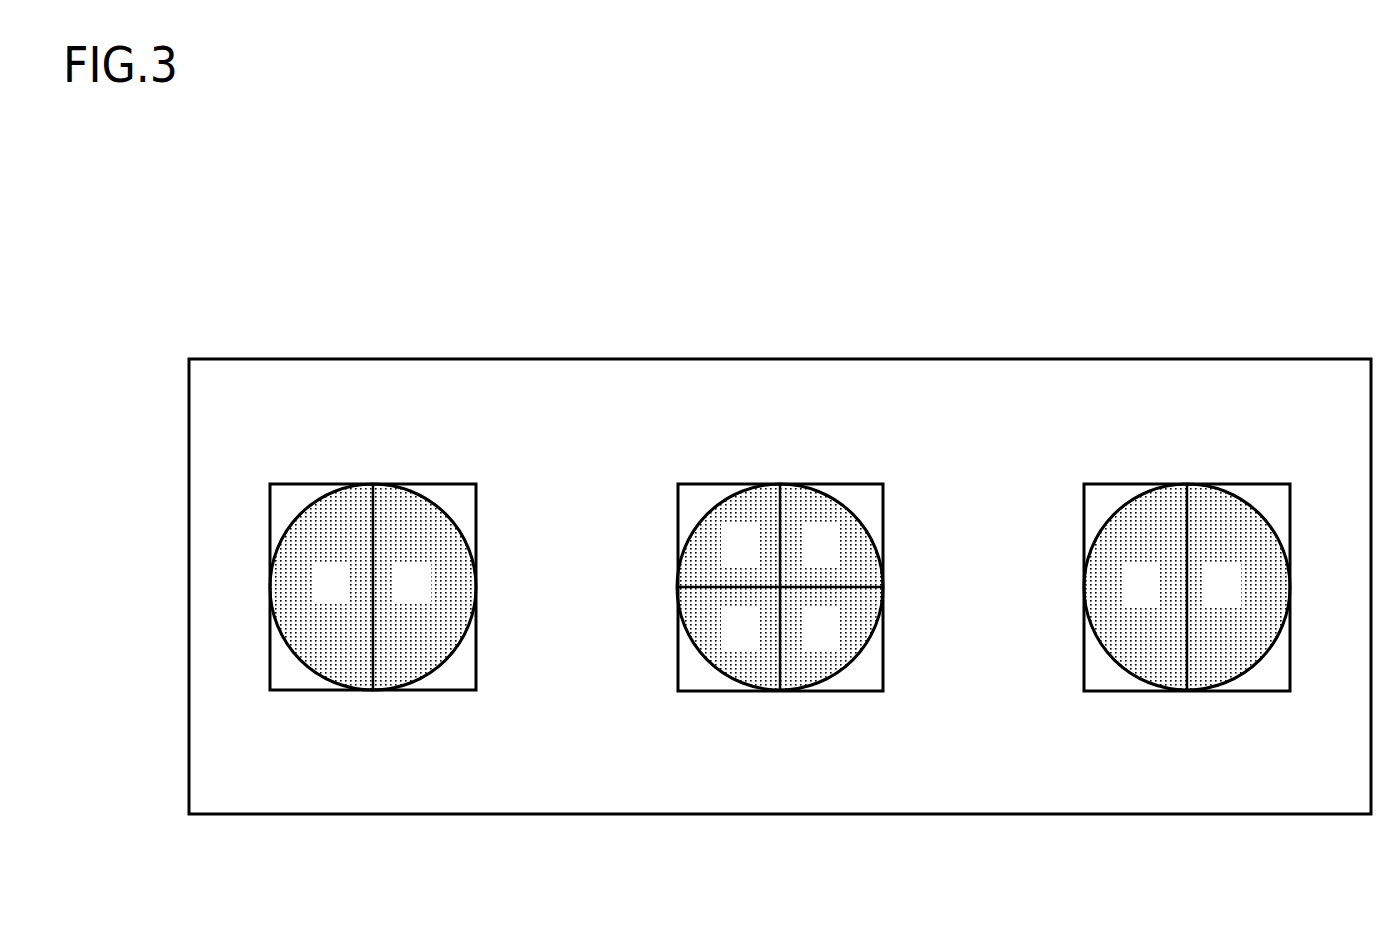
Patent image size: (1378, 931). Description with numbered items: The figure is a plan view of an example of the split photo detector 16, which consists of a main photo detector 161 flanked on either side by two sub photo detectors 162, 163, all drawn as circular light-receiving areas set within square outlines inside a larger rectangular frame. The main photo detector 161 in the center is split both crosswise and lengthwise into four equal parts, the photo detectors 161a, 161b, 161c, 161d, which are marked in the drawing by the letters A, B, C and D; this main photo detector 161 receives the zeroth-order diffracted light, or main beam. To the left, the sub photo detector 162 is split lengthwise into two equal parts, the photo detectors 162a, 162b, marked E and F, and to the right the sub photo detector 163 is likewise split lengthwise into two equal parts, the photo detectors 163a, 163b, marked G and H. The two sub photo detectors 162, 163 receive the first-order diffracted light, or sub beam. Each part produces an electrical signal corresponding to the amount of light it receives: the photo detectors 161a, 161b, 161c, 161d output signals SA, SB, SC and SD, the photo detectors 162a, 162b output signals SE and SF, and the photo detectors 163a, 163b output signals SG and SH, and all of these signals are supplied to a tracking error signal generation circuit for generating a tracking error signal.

The split photo detector 16 is at (802, 350).
The main photo detector 161 is at (852, 587).
The photo detector 161a is at (862, 610).
The photo detector 161b is at (743, 673).
The photo detector 161c is at (732, 490).
The photo detector 161d is at (825, 508).
The sub photo detector 162 is at (417, 598).
The photo detector 162a is at (346, 673).
The photo detector 162b is at (422, 663).
The sub photo detector 163 is at (1204, 595).
The photo detector 163a is at (1120, 667).
The photo detector 163b is at (1230, 665).